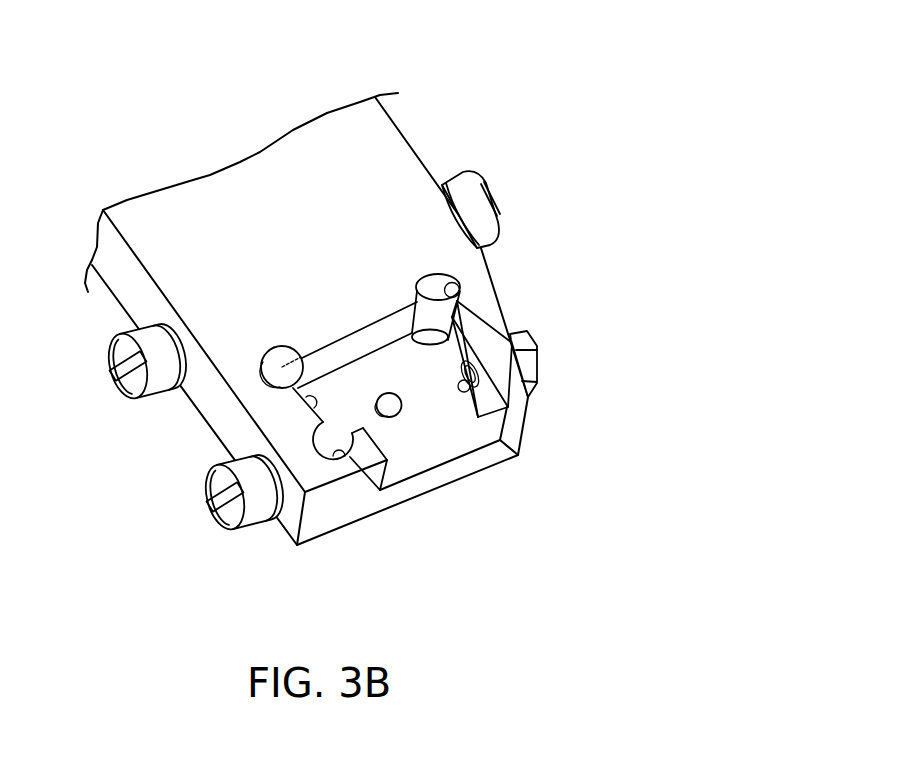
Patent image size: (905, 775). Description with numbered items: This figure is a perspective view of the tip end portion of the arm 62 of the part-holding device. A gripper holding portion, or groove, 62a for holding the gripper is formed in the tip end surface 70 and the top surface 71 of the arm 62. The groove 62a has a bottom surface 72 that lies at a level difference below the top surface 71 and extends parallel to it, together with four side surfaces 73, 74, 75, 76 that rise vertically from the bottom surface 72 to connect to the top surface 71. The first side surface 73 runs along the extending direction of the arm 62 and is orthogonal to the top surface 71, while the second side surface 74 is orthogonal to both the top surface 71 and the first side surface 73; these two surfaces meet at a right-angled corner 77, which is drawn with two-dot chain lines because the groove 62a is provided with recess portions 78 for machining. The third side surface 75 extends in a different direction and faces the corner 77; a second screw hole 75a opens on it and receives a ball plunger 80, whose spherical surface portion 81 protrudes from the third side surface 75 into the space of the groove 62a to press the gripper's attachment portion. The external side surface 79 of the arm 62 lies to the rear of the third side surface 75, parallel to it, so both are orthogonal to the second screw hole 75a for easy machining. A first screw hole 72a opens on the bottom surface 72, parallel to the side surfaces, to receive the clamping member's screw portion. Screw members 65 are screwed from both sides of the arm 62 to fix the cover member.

The arm 62 is at (488, 56).
The gripper holding portion (groove) 62a is at (447, 458).
The screw member 65 is at (497, 208).
The tip end surface 70 is at (339, 515).
The top surface 71 is at (395, 154).
The bottom surface (third surface) 72 is at (463, 437).
The first screw hole 72a is at (380, 396).
The first side surface (first surface) 73 is at (303, 402).
The second side surface (second surface) 74 is at (378, 330).
The third side surface 75 is at (450, 343).
The second screw hole 75a is at (473, 367).
The fourth side surface 76 is at (364, 420).
The corner 77 is at (270, 346).
The recess portion 78 is at (460, 297).
The external side surface 79 is at (490, 273).
The ball plunger (pressing means) 80 is at (540, 360).
The spherical surface portion 81 is at (485, 388).